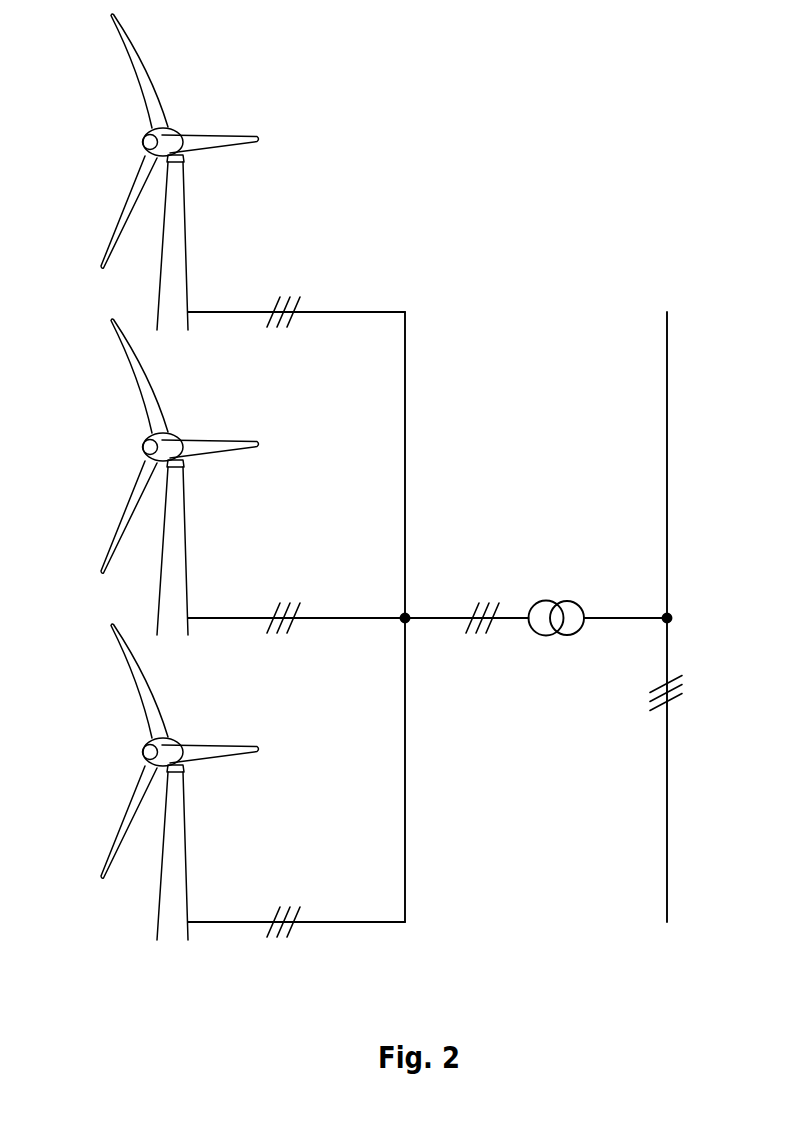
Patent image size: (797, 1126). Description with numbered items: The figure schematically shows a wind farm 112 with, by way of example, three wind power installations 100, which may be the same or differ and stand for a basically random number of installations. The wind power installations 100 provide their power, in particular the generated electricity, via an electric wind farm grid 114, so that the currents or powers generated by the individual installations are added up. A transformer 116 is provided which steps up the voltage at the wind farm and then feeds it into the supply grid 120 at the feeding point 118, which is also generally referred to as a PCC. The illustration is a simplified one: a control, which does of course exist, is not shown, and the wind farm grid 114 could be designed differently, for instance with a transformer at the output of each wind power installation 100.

The wind power installation 100 is at (178, 228).
The wind farm 112 is at (478, 140).
The electric wind farm grid 114 is at (427, 617).
The transformer 116 is at (560, 595).
The feeding point 118 is at (678, 600).
The supply grid 120 is at (667, 345).